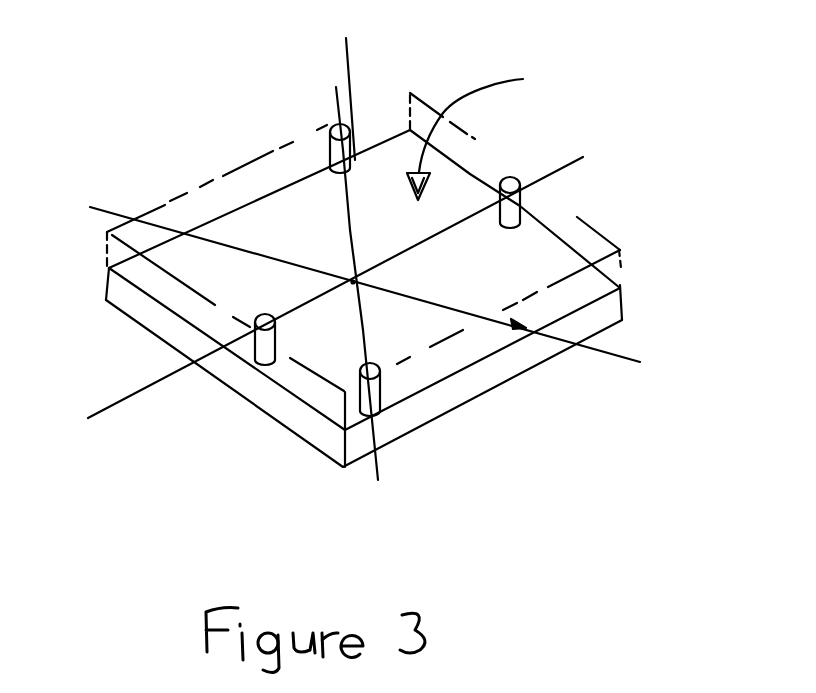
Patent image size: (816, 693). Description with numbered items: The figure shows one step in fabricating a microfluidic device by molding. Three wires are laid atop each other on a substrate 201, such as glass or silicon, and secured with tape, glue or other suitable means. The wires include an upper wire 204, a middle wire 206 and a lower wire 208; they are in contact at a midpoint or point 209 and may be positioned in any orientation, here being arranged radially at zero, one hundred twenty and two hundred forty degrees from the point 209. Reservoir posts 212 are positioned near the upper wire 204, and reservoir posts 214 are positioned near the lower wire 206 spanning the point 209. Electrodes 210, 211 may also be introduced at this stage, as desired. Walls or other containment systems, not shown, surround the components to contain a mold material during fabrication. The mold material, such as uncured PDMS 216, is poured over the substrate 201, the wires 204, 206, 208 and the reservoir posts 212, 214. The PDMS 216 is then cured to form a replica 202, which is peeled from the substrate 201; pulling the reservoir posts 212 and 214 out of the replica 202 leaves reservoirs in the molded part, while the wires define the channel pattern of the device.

The substrate 201 is at (503, 389).
The replica 202 is at (608, 244).
The upper wire 204 is at (330, 103).
The middle wire 206 is at (126, 220).
The lower wire 208 is at (157, 388).
The point 209 is at (372, 278).
The electrode 210 is at (511, 178).
The electrode 211 is at (352, 53).
The reservoir posts 212 is at (352, 148).
The reservoir posts 214 is at (545, 190).
The PDMS 216 is at (501, 130).